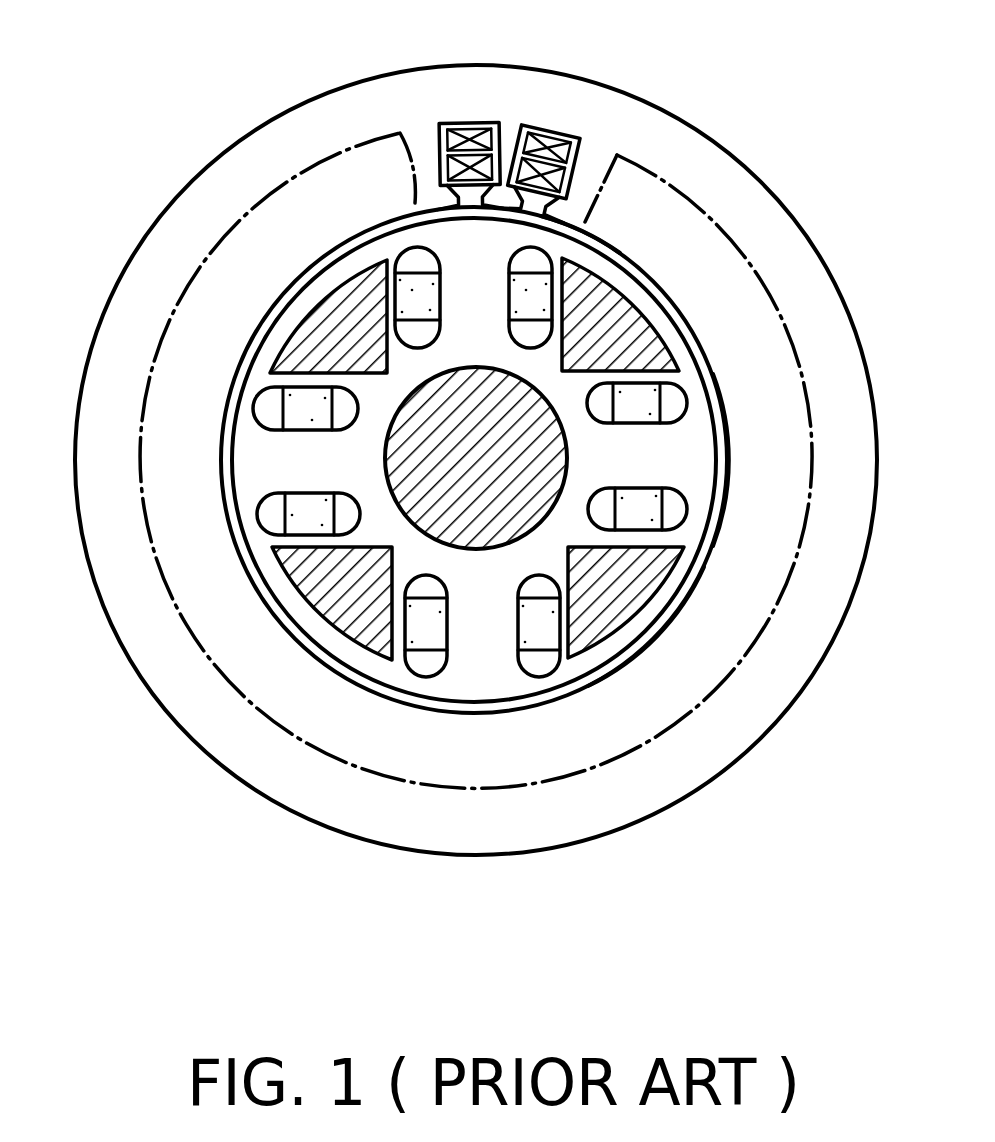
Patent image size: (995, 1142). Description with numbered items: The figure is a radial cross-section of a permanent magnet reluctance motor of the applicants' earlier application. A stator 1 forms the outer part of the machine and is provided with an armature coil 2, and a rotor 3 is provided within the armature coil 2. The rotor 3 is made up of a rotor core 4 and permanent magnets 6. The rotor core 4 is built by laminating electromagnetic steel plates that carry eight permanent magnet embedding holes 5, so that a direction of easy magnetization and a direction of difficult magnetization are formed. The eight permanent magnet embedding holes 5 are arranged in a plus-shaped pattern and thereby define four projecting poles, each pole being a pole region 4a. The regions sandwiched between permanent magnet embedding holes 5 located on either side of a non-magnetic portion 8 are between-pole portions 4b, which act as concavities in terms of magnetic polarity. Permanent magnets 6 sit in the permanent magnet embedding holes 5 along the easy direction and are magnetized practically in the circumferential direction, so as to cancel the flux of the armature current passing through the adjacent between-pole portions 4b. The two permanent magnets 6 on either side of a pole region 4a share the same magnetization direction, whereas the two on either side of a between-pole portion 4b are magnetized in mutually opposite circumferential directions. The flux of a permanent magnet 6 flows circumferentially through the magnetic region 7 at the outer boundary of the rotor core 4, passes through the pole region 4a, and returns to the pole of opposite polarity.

The stator 1 is at (135, 287).
The armature coil 2 is at (477, 123).
The rotor 3 is at (297, 298).
The rotor core 4 is at (253, 473).
The pole region 4a is at (725, 365).
The between-pole portion 4b is at (722, 573).
The permanent magnet embedding hole 5 is at (407, 667).
The permanent magnet 6 is at (433, 625).
The magnetic region 7 is at (580, 228).
The non-magnetic portion 8 is at (570, 658).